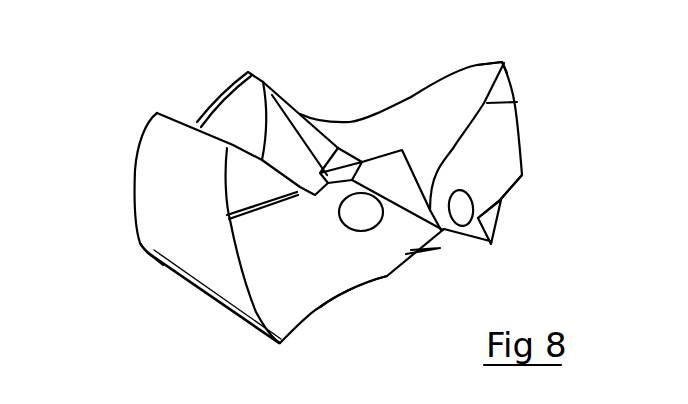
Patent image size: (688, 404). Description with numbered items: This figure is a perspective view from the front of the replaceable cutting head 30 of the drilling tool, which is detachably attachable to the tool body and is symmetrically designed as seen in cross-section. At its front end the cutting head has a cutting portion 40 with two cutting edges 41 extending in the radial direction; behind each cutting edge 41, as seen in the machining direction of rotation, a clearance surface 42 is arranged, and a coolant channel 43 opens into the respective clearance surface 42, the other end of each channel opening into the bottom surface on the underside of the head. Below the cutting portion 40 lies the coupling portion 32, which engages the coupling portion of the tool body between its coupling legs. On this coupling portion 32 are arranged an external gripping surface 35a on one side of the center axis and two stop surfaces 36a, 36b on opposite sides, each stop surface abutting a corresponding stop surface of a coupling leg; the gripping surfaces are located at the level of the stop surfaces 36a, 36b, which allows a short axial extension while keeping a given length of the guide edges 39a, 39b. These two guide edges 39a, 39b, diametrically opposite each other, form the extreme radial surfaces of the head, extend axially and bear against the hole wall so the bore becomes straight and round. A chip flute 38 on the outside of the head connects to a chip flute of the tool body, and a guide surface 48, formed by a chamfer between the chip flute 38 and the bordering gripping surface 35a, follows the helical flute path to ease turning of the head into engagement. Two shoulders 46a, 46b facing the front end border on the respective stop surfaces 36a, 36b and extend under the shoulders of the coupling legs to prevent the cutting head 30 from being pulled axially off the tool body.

The replaceable cutting head 30 is at (317, 203).
The coupling portion 32 is at (181, 319).
The external gripping surface 35a is at (248, 123).
The stop surface 36a is at (267, 95).
The stop surface 36b is at (478, 226).
The chip flute 38 is at (411, 115).
The guide edge 39a is at (163, 265).
The guide edge 39b is at (504, 62).
The cutting portion 40 is at (383, 321).
The cutting edge 41 is at (517, 102).
The clearance surface 42 is at (502, 142).
The coolant channel 43 is at (349, 218).
The shoulder 46a is at (238, 183).
The shoulder 46b is at (497, 211).
The guide surface 48 is at (267, 104).